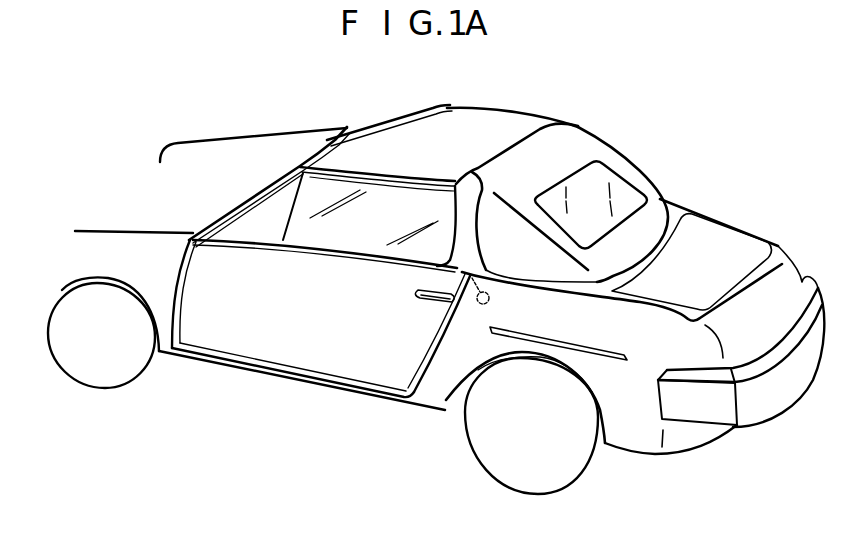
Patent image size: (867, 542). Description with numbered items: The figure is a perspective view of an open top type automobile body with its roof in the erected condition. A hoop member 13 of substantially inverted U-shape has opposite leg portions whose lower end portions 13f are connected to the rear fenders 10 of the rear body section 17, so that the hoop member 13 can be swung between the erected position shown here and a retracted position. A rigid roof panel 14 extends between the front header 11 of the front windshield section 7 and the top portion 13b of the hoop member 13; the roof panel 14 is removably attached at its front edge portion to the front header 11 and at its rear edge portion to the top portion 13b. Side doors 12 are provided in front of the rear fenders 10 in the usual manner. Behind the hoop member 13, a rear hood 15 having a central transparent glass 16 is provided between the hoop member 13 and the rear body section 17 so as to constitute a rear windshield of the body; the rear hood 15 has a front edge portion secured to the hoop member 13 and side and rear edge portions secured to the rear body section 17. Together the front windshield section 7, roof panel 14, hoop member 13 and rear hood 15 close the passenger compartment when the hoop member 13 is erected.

The front windshield section 7 is at (246, 180).
The rear fenders 10 is at (445, 380).
The front header 11 is at (350, 130).
The side doors 12 is at (373, 372).
The hoop member 13 is at (577, 121).
The top portion of the hoop member 13b is at (520, 142).
The lower end portions of the hoop member 13f is at (490, 303).
The rigid roof panel 14 is at (468, 127).
The rear hood 15 is at (589, 150).
The central transparent glass 16 is at (625, 202).
The rear body section 17 is at (713, 238).